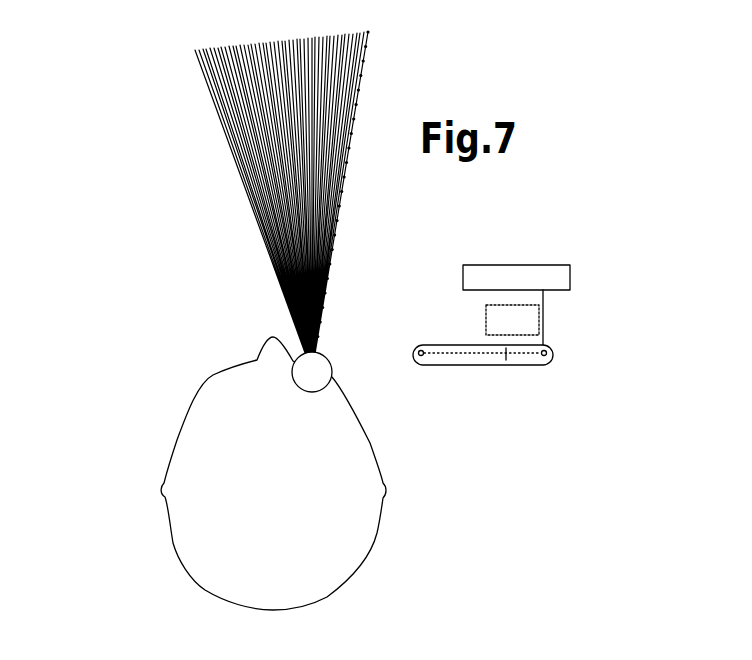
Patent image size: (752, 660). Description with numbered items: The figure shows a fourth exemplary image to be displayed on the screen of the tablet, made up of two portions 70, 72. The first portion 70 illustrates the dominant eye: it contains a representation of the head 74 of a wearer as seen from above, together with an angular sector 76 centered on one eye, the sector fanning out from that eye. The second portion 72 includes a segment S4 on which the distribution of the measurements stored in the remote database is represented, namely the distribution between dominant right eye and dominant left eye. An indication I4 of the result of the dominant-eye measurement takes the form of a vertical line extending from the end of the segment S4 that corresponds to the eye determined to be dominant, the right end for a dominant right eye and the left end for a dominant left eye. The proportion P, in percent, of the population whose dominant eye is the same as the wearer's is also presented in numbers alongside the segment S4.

The first portion 70 is at (214, 320).
The second portion 72 is at (513, 414).
The head 74 is at (172, 537).
The angular sector 76 is at (268, 196).
The proportion P is at (486, 328).
The indication I4 is at (534, 304).
The segment S4 is at (578, 401).